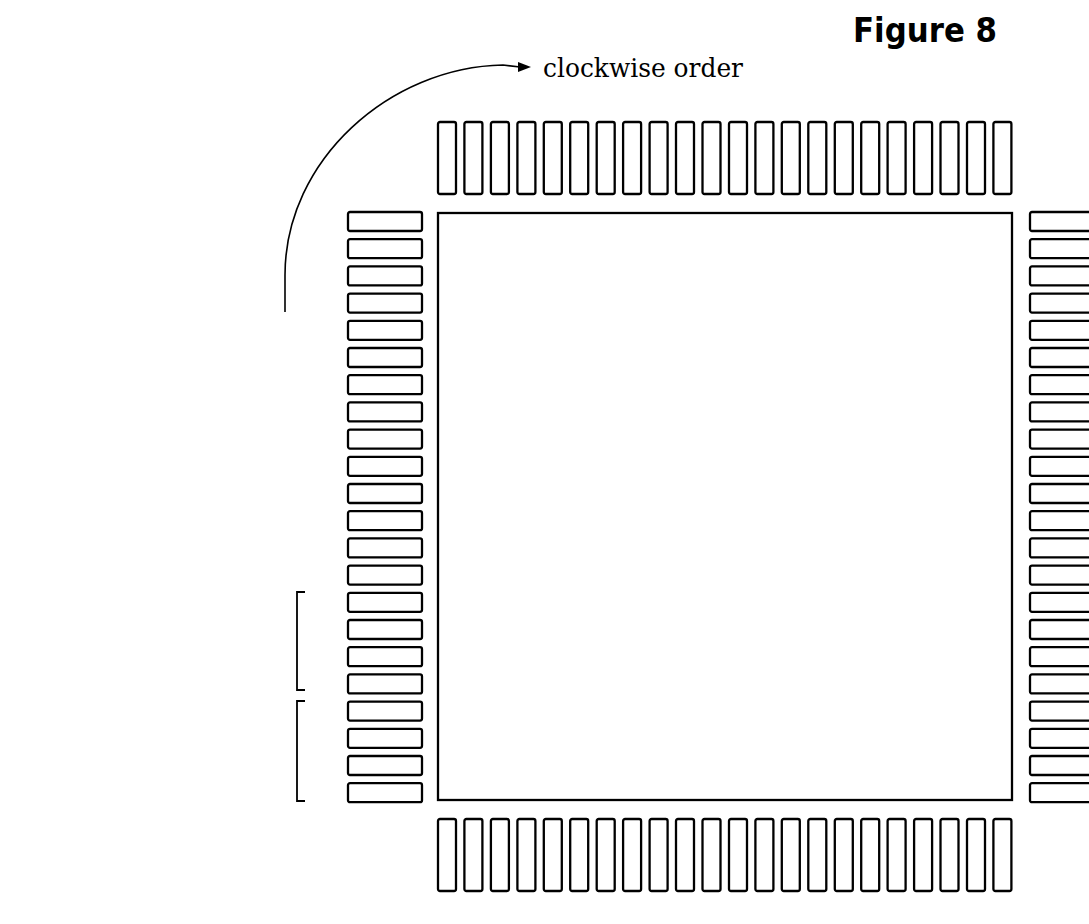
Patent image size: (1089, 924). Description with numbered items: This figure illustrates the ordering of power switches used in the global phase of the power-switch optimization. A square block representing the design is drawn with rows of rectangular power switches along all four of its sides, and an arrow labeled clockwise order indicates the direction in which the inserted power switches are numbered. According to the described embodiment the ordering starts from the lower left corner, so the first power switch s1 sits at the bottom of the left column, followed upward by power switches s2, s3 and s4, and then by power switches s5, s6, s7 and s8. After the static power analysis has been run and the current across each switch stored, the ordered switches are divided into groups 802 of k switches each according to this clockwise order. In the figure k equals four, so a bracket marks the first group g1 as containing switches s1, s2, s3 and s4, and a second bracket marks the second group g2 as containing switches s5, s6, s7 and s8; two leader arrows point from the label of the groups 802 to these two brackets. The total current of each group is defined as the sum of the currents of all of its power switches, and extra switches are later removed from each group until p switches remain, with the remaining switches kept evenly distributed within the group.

The groups 802 is at (259, 673).
The first group g1 is at (341, 753).
The second group g2 is at (341, 644).
The power switch s1 is at (377, 794).
The power switch s2 is at (377, 767).
The power switch s3 is at (377, 740).
The power switch s4 is at (377, 713).
The power switch s5 is at (377, 685).
The power switch s6 is at (377, 658).
The power switch s7 is at (377, 631).
The power switch s8 is at (377, 604).